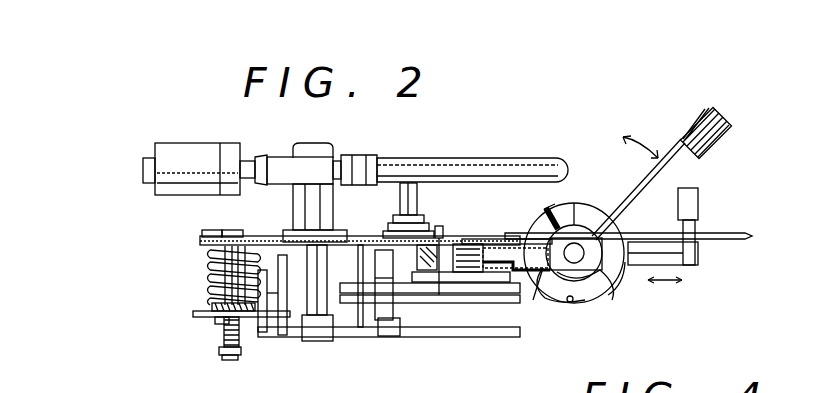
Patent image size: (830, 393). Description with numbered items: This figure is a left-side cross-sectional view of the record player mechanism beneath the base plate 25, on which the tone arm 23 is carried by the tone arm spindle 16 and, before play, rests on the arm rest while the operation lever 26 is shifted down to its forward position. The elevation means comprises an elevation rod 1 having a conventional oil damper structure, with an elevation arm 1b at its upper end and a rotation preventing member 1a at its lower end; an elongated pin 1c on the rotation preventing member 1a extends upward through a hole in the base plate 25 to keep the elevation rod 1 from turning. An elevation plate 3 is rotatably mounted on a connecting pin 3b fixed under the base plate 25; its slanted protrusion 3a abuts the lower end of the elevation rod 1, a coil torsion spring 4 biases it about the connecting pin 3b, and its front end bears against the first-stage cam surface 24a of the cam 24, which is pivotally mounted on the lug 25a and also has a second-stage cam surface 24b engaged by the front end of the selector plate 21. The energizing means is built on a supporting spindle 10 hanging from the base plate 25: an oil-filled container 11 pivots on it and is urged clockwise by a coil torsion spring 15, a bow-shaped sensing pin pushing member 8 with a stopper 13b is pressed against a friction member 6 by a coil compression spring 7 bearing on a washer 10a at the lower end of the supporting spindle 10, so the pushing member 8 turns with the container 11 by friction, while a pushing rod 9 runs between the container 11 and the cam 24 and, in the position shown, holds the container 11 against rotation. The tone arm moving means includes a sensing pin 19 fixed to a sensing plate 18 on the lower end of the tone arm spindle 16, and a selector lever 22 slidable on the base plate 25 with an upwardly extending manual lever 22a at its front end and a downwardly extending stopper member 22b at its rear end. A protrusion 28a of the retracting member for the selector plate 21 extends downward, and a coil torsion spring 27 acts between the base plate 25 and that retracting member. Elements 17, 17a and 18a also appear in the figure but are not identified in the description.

The elevation rod 1 is at (425, 215).
The rotation preventing member 1a is at (440, 295).
The elevation arm 1b is at (418, 195).
The elongated pin 1c is at (444, 229).
The elevation plate 3 is at (525, 270).
The slanted protrusion 3a is at (450, 280).
The connecting pin 3b is at (470, 244).
The coil torsion spring 4 is at (486, 252).
The friction member 6 is at (205, 302).
The coil compression spring 7 is at (222, 340).
The sensing pin pushing member 8 is at (215, 318).
The pushing rod 9 is at (560, 300).
The supporting spindle 10 is at (226, 355).
The washer 10a is at (238, 360).
The container 11 is at (212, 262).
The stopper 13b is at (193, 313).
The coil torsion spring 15 is at (210, 234).
The tone arm spindle 16 is at (290, 250).
The rod 17 is at (368, 327).
The rod block 17a is at (392, 336).
The sensing plate 18 is at (318, 341).
The bottom plate 18a is at (340, 337).
The sensing pin 19 is at (240, 234).
The selector plate 21 is at (484, 292).
The selector lever 22 is at (670, 262).
The manual lever 22a is at (700, 198).
The stopper member 22b is at (292, 305).
The tone arm 23 is at (438, 160).
The cam 24 is at (590, 303).
The first-stage cam surface 24a is at (606, 296).
The second-stage cam surface 24b is at (588, 210).
The base plate 25 is at (752, 236).
The lug 25a is at (617, 290).
The operation lever 26 is at (724, 152).
The coil torsion spring 27 is at (362, 237).
The protrusion 28a is at (425, 302).